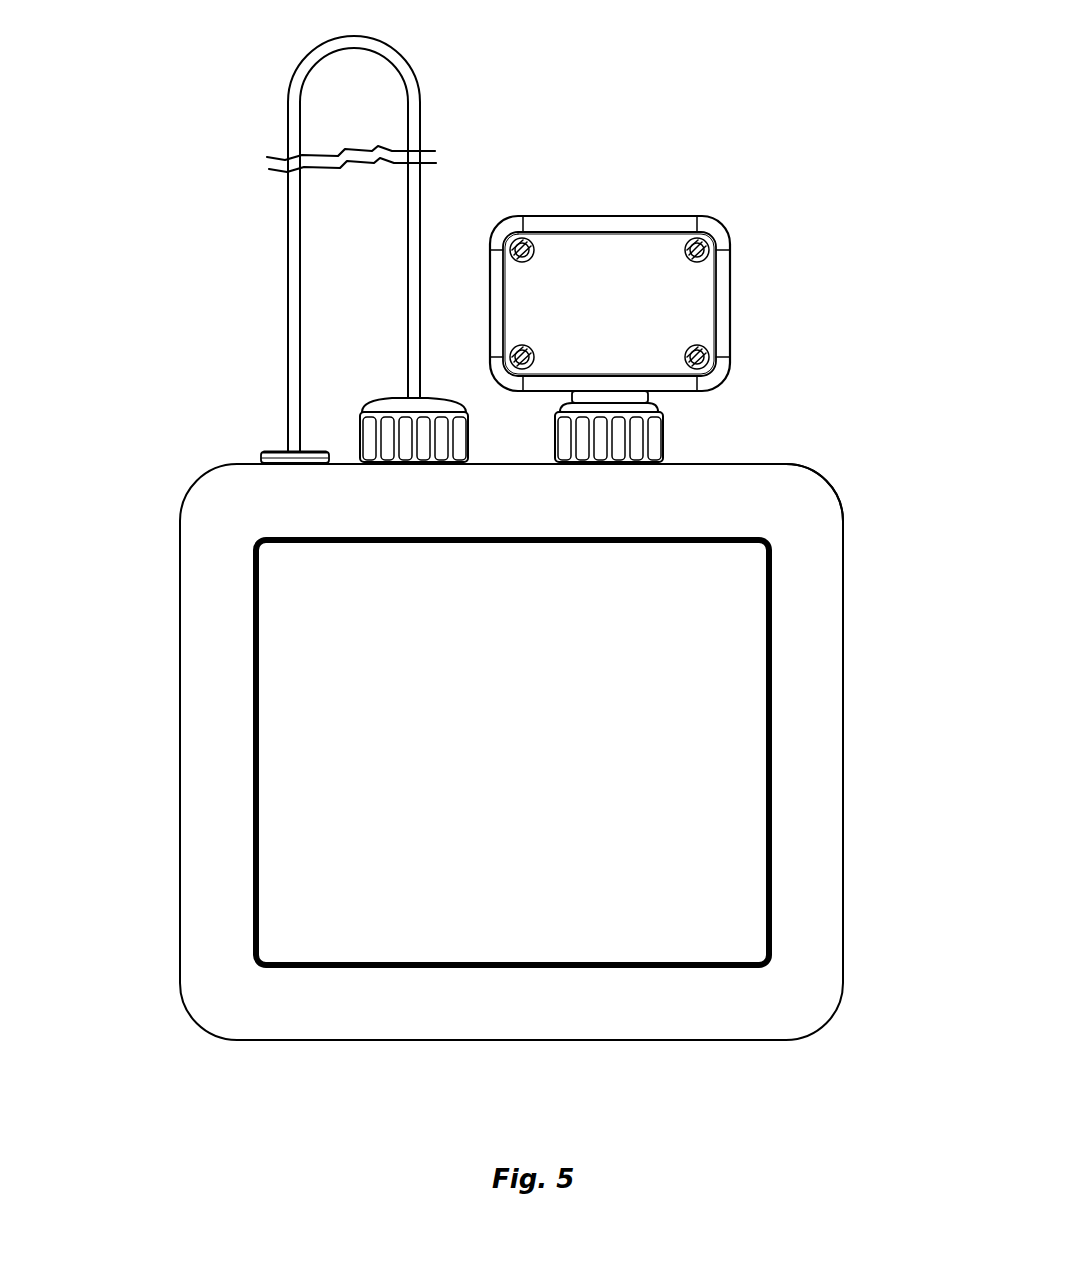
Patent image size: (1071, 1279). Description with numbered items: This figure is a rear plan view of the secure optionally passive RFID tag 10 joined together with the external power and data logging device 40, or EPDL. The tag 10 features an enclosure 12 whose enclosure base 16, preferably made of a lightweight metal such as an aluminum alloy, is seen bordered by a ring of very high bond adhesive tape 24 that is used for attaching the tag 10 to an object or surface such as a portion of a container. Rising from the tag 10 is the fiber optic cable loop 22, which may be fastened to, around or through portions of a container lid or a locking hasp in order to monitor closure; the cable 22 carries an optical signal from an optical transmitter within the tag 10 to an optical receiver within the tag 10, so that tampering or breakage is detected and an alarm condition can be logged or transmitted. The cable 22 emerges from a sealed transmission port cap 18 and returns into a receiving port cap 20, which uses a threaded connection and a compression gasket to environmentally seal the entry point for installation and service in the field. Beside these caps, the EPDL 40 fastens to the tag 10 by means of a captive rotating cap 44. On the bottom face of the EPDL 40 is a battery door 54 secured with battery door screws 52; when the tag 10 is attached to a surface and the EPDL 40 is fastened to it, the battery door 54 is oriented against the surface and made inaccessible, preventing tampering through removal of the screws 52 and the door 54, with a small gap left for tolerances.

The tag 10 is at (193, 367).
The enclosure 12 is at (172, 482).
The enclosure base 16 is at (280, 622).
The sealed transmission port cap 18 is at (268, 452).
The receiving port cap 20 is at (438, 398).
The fiber optic cable loop 22 is at (288, 315).
The adhesive 24 is at (819, 527).
The external power and data logging device 40 is at (643, 230).
The captive rotating cap 44 is at (665, 442).
The battery door screws 52 is at (706, 240).
The battery door 54 is at (557, 265).